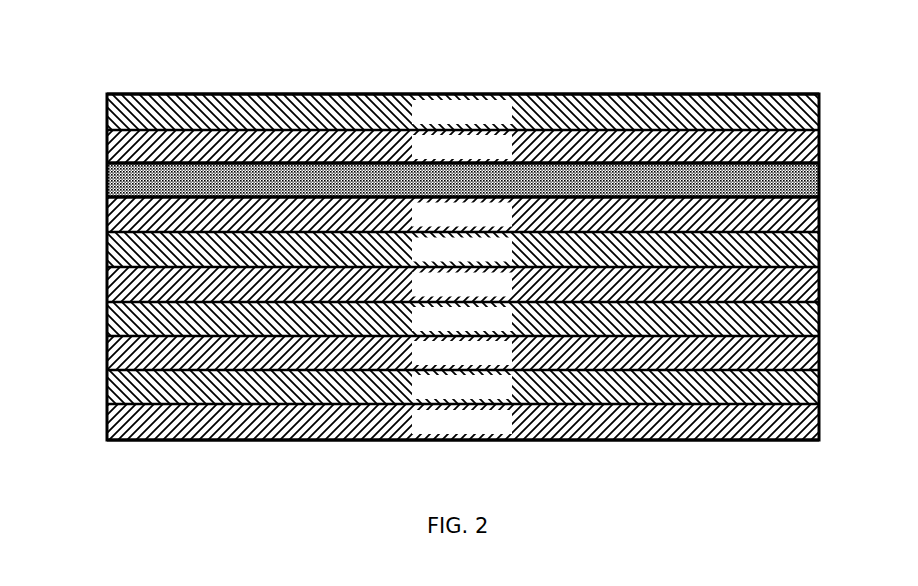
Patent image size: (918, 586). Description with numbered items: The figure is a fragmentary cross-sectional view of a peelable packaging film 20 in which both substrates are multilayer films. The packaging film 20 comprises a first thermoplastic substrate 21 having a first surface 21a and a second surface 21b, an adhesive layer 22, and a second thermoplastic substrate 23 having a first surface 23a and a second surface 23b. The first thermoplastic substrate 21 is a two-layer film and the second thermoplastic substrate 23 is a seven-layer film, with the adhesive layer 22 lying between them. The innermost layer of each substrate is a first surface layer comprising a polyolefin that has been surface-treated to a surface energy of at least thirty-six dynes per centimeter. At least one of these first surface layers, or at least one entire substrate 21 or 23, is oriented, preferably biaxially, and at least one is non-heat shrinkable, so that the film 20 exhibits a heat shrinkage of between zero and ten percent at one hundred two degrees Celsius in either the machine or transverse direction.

The packaging film 20 is at (463, 264).
The first thermoplastic substrate 21 is at (107, 122).
The first surface of the first thermoplastic substrate 21a is at (168, 172).
The second surface of the first thermoplastic substrate 21b is at (245, 85).
The adhesive layer 22 is at (820, 183).
The second thermoplastic substrate 23 is at (307, 441).
The first surface of the second thermoplastic substrate 23a is at (751, 213).
The second surface of the second thermoplastic substrate 23b is at (655, 452).